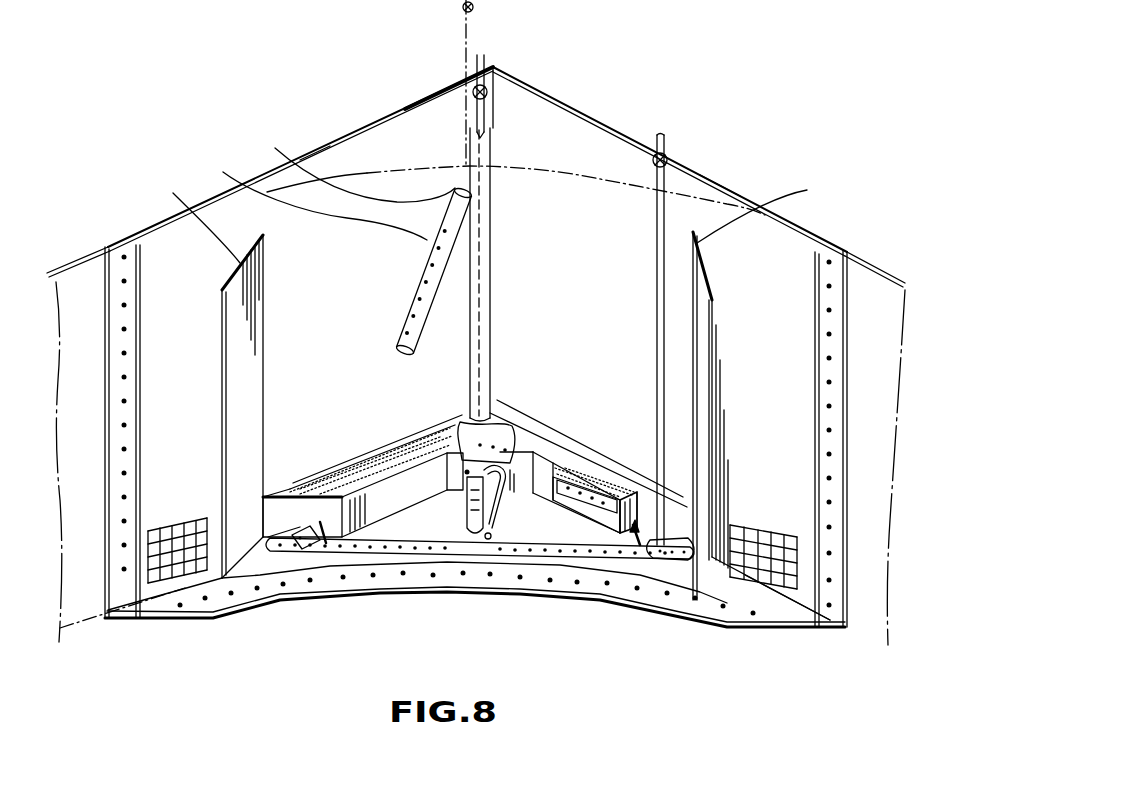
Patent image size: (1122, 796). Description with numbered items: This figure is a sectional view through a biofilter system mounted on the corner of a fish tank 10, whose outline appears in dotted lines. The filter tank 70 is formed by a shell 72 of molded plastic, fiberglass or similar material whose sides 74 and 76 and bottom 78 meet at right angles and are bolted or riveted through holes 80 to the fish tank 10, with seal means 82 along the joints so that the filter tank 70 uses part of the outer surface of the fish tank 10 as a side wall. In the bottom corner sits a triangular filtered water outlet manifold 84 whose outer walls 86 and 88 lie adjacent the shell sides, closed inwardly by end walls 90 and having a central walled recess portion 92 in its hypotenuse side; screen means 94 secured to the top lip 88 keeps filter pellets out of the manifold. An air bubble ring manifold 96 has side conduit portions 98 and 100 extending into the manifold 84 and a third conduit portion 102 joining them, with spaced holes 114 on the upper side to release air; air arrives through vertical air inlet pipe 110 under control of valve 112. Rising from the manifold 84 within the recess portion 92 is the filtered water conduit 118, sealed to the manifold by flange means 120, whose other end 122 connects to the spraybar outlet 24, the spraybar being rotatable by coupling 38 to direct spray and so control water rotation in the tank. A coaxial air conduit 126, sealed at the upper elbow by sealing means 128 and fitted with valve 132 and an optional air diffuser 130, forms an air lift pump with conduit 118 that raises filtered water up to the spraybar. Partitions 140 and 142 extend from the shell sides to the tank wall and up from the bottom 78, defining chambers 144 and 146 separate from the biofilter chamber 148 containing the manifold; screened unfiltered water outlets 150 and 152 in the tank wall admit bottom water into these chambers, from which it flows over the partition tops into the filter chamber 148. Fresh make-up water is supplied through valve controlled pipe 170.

The fish tank 10 is at (573, 170).
The spraybar outlet 24 is at (311, 192).
The coupling 38 is at (349, 163).
The filter tank 70 is at (373, 113).
The shell 72 is at (578, 110).
The side of shell 74 is at (325, 143).
The side of shell 76 is at (722, 190).
The bottom of shell 78 is at (298, 600).
The holes 80 is at (833, 262).
The seal means 82 is at (110, 243).
The filtered water outlet manifold 84 is at (560, 432).
The outer wall of manifold 86 is at (392, 442).
The outer wall / top lip of manifold 88 is at (340, 470).
The end walls 90 is at (322, 543).
The walled recess portion 92 is at (420, 482).
The screen means 94 is at (533, 437).
The air bubble ring manifold 96 is at (390, 552).
The side conduit portion 98 is at (292, 527).
The side conduit portion 100 is at (668, 547).
The third conduit portion 102 is at (465, 550).
The vertical air inlet pipe 110 is at (663, 207).
The valve 112 is at (667, 152).
The spaced holes 114 is at (590, 498).
The filtered water conduit 118 is at (490, 320).
The flange means 120 is at (510, 478).
The other end of conduit 122 is at (452, 188).
The air conduit 126 is at (478, 255).
The sealing means 128 is at (492, 108).
The air diffuser 130 is at (488, 540).
The valve 132 is at (498, 70).
The partition 140 is at (190, 211).
The partition 142 is at (771, 206).
The chamber 144 is at (156, 412).
The chamber 146 is at (749, 342).
The biofilter chamber 148 is at (309, 335).
The screened unfiltered water outlet 150 is at (203, 567).
The screened unfiltered water outlet 152 is at (775, 585).
The valve controlled pipe 170 is at (470, 43).